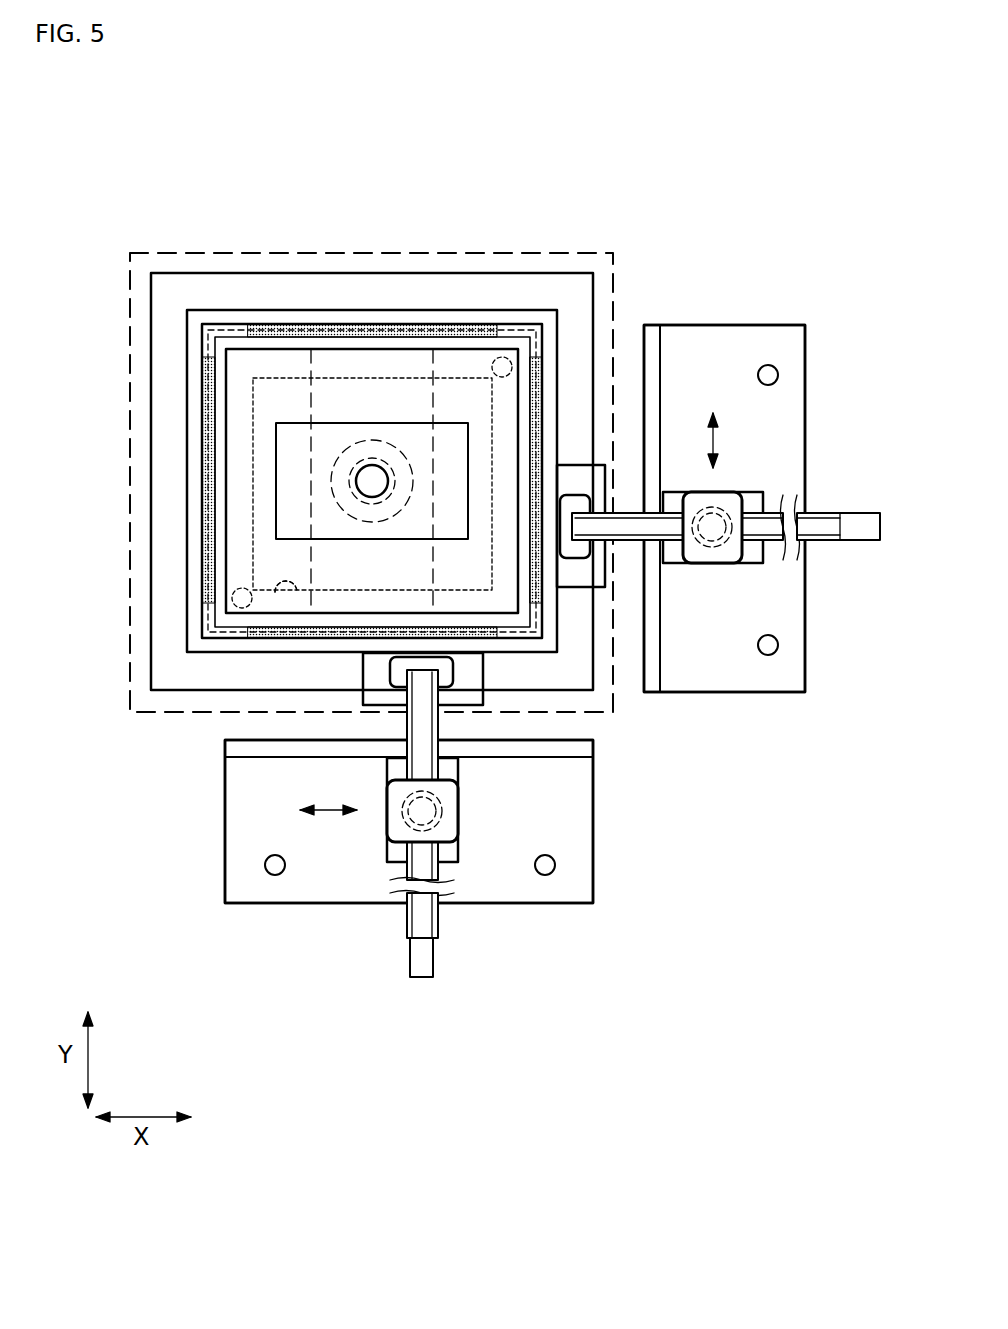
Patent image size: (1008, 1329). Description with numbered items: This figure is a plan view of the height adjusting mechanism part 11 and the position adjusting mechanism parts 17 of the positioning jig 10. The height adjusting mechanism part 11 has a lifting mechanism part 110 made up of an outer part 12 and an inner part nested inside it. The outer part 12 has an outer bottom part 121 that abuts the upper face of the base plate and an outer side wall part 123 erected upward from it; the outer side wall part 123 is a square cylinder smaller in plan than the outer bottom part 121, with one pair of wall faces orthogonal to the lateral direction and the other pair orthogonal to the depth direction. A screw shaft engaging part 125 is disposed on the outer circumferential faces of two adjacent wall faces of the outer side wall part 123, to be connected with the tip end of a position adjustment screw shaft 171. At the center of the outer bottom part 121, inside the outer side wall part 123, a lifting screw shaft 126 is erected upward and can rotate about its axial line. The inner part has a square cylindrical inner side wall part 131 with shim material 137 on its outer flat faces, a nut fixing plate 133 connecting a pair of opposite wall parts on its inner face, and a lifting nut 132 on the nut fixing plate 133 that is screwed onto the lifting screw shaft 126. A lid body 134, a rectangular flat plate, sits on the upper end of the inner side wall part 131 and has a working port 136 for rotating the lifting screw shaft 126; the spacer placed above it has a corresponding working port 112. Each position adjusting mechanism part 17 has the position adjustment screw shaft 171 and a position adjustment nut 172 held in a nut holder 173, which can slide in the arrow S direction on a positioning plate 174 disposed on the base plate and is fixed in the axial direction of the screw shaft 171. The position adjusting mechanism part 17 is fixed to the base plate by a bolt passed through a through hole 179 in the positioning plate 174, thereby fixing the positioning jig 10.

The positioning jig 10 is at (597, 123).
The height adjusting mechanism part 11 is at (420, 262).
The lifting mechanism part 110 is at (371, 437).
The outer part 12 is at (553, 262).
The position adjusting mechanism part 17 is at (703, 315).
The outer bottom part 121 is at (173, 670).
The outer side wall part 123 is at (188, 473).
The screw shaft engaging part 125 is at (597, 580).
The lifting screw shaft 126 is at (373, 462).
The inner side wall part 131 is at (206, 590).
The lifting nut 132 is at (408, 462).
The nut fixing plate 133 is at (324, 360).
The lid body 134 is at (218, 338).
The working port 136 is at (232, 764).
The shim material 137 is at (206, 383).
The working port 112 is at (287, 600).
The position adjustment screw shaft 171 is at (868, 528).
The position adjustment nut 172 is at (730, 553).
The nut holder 173 is at (753, 556).
The positioning plate 174 is at (790, 668).
The through hole 179 is at (766, 366).
The arrow S direction S is at (718, 437).